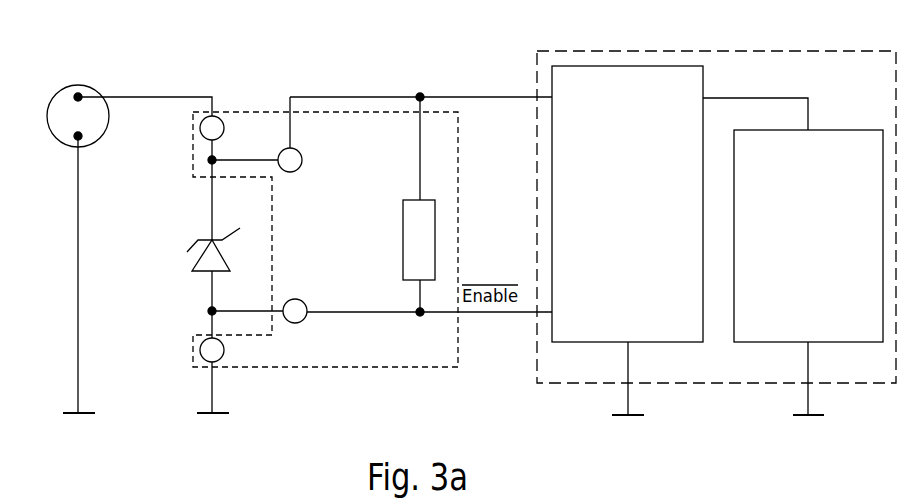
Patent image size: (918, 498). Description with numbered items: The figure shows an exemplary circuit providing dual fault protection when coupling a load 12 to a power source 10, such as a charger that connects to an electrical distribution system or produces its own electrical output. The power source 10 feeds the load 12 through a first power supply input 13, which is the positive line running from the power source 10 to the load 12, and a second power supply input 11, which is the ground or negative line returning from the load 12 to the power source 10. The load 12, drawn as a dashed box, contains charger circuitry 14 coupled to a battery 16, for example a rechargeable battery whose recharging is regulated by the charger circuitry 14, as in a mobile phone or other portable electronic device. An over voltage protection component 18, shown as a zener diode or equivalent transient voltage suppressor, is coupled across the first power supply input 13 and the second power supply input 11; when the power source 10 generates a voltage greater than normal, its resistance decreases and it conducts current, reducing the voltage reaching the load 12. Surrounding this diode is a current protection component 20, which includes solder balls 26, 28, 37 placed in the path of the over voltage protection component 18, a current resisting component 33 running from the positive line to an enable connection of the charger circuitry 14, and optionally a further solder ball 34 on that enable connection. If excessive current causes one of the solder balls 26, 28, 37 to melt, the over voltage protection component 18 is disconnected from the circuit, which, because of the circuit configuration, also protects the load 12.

The power source 10 is at (81, 83).
The second power supply input 11 is at (78, 272).
The load 12 is at (725, 48).
The first power supply input 13 is at (353, 97).
The charger circuitry 14 is at (592, 344).
The battery 16 is at (773, 345).
The over voltage protection component 18 is at (191, 271).
The current protection component 20 is at (460, 207).
The solder ball 26 is at (300, 152).
The solder ball 28 is at (222, 123).
The current resisting component 33 is at (432, 248).
The solder ball 34 is at (300, 298).
The solder ball 37 is at (225, 351).